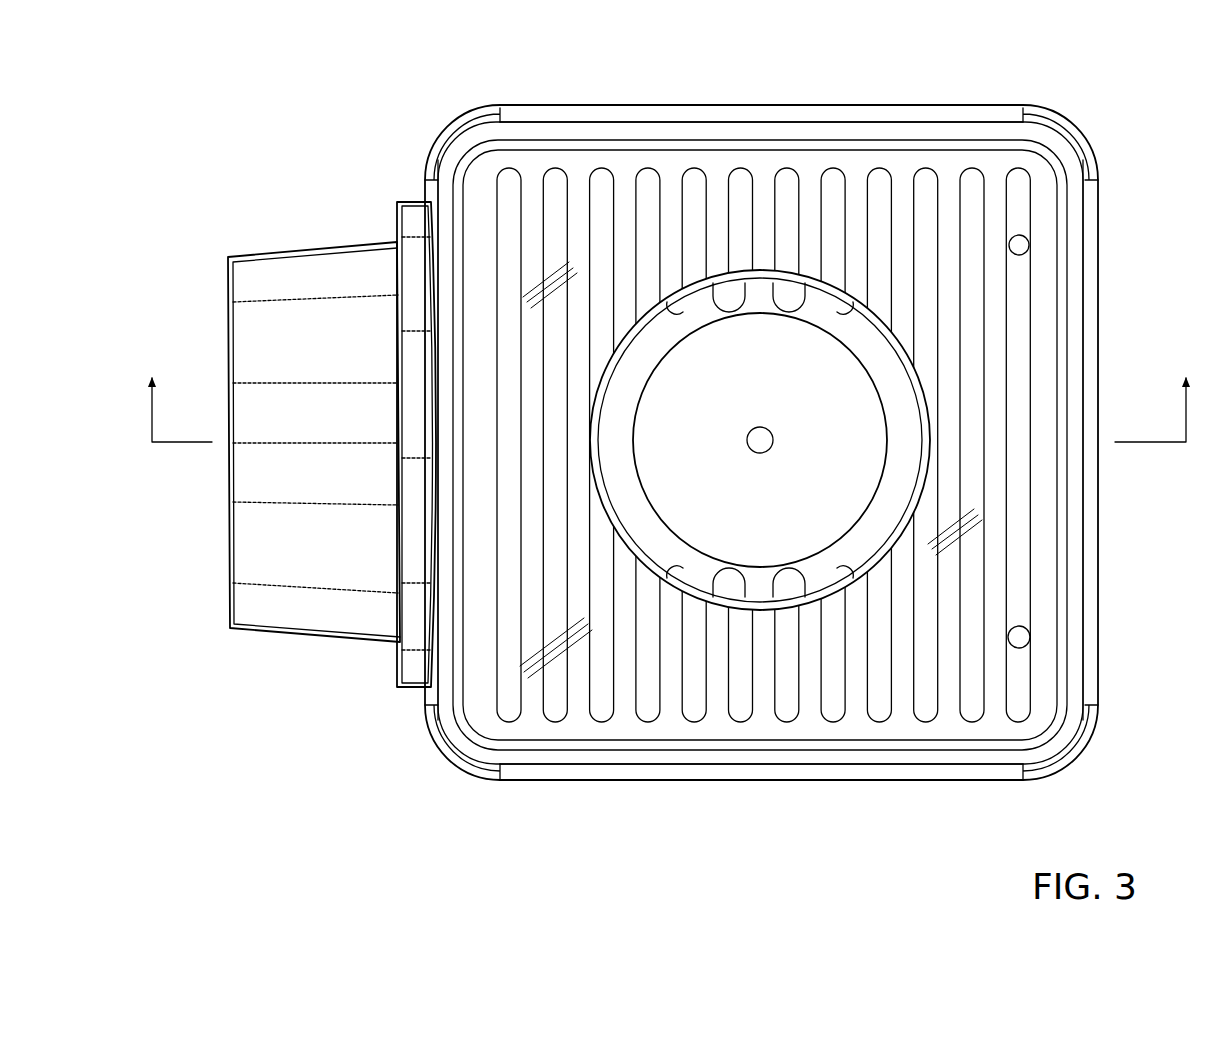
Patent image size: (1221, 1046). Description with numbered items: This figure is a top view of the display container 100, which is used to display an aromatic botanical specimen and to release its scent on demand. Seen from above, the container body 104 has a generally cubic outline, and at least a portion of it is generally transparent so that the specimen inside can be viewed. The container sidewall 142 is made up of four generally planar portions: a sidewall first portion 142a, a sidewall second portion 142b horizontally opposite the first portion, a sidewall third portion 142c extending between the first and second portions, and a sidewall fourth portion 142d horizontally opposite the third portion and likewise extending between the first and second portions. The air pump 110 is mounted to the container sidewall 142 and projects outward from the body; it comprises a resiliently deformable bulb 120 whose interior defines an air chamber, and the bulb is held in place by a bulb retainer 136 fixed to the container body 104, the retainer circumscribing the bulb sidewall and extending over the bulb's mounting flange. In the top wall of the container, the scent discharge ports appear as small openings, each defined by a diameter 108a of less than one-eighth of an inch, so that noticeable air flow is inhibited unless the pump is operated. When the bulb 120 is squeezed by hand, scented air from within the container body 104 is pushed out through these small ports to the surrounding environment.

The display container 100 is at (665, 432).
The container body 104 is at (763, 434).
The diameter 108a is at (992, 684).
The air pump 110 is at (289, 430).
The resiliently deformable bulb 120 is at (230, 258).
The bulb retainer 136 is at (412, 210).
The container sidewall 142 is at (762, 434).
The sidewall first portion 142a is at (443, 695).
The sidewall second portion 142b is at (1077, 658).
The sidewall third portion 142c is at (795, 755).
The sidewall fourth portion 142d is at (765, 128).